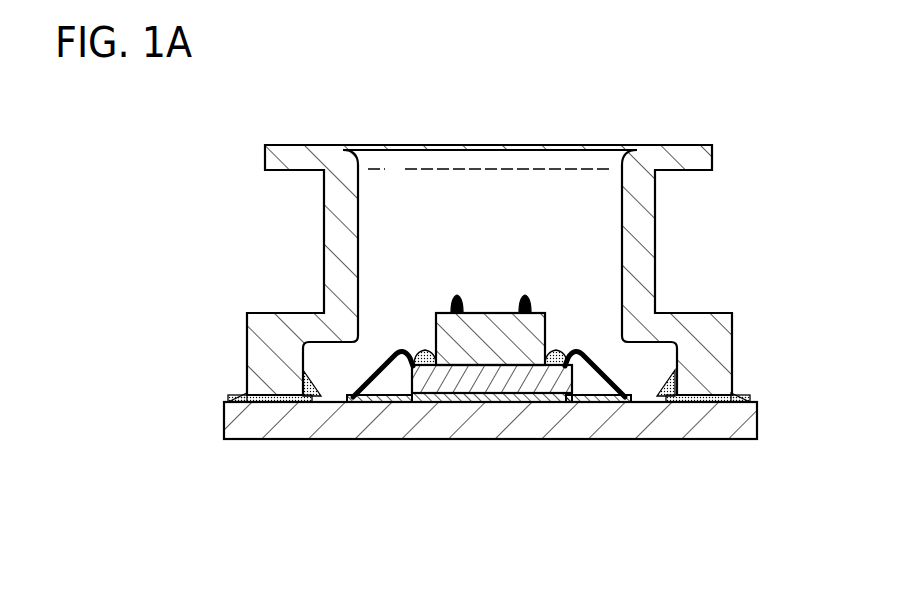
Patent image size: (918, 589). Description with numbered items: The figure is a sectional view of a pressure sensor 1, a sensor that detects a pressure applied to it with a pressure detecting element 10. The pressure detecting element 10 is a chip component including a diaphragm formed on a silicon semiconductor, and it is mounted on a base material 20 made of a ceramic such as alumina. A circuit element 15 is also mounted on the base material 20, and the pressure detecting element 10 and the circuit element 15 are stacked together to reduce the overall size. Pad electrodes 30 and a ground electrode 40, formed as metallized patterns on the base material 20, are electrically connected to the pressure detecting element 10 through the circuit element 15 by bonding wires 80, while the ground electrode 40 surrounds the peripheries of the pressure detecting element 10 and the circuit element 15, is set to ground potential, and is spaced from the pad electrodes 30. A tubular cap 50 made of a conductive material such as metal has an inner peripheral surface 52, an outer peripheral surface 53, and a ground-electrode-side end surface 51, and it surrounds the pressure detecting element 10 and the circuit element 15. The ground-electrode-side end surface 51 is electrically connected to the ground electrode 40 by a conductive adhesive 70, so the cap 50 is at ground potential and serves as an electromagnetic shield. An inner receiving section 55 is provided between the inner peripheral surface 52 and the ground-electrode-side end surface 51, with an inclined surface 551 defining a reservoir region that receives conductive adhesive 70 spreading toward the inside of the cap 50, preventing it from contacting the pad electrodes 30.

The pressure sensor 1 is at (702, 105).
The pressure detecting element 10 is at (490, 312).
The circuit element 15 is at (490, 393).
The base material 20 is at (750, 423).
The pad electrodes 30 is at (392, 402).
The ground electrode 40 is at (264, 399).
The cap 50 is at (703, 160).
The ground-electrode-side end surface 51 is at (246, 398).
The inner peripheral surface 52 is at (366, 300).
The outer peripheral surface 53 is at (247, 358).
The inner receiving section 55 is at (296, 399).
The conductive adhesive 70 is at (323, 392).
The bonding wires 80 is at (414, 346).
The inclined surface 551 is at (313, 384).